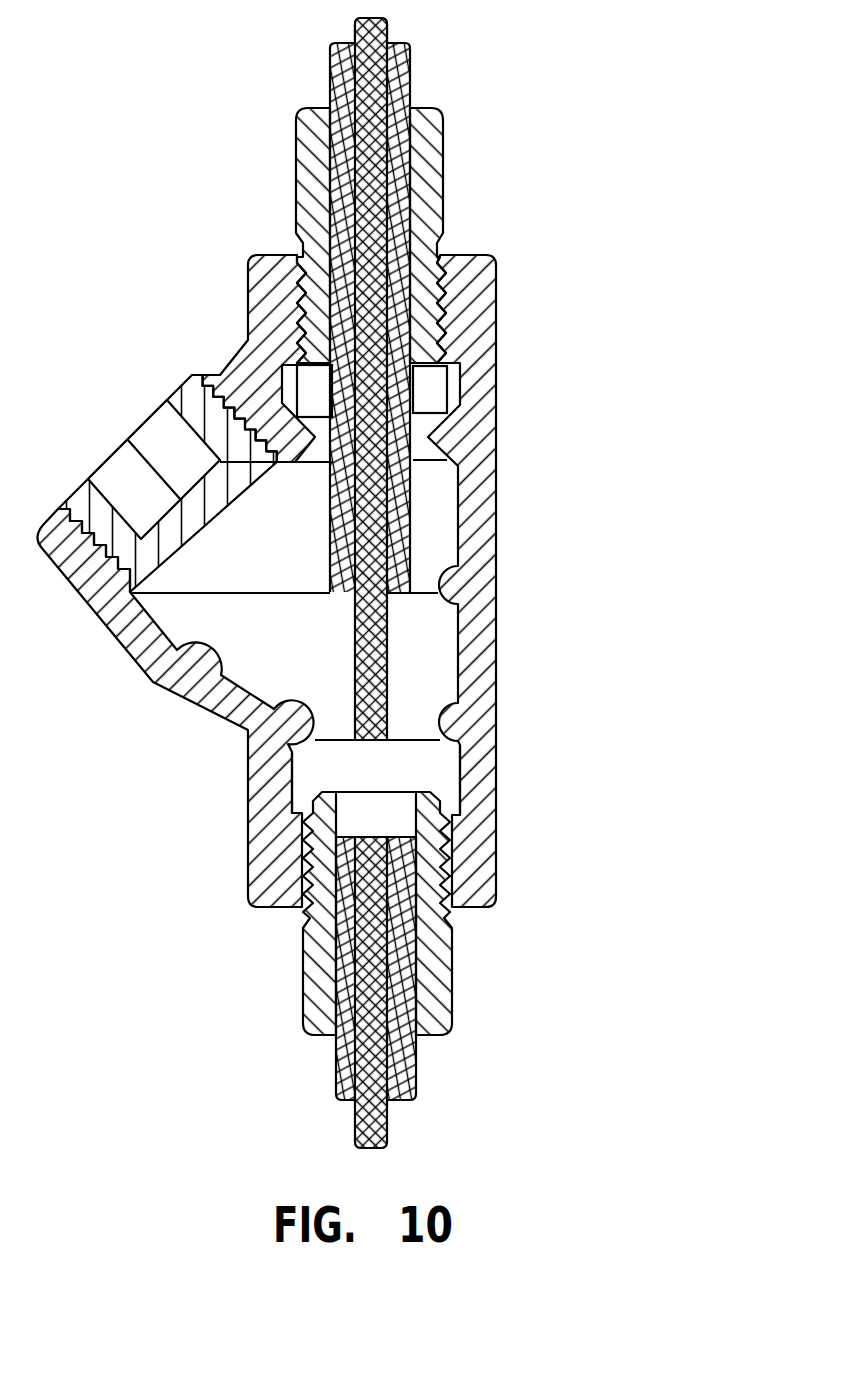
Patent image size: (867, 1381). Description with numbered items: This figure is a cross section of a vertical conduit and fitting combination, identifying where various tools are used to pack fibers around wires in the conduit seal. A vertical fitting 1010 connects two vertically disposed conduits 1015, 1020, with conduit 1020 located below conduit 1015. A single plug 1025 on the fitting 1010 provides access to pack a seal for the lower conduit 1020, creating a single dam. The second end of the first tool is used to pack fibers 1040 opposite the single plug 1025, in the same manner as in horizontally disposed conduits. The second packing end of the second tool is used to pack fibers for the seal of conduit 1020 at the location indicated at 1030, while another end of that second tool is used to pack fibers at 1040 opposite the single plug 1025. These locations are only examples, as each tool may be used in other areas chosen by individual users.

The vertical fitting 1010 is at (497, 477).
The conduit 1015 is at (444, 178).
The conduit 1020 is at (453, 970).
The single plug 1025 is at (183, 396).
The packing location for conduit seal 1030 is at (302, 776).
The fibers opposite the single plug 1040 is at (443, 772).